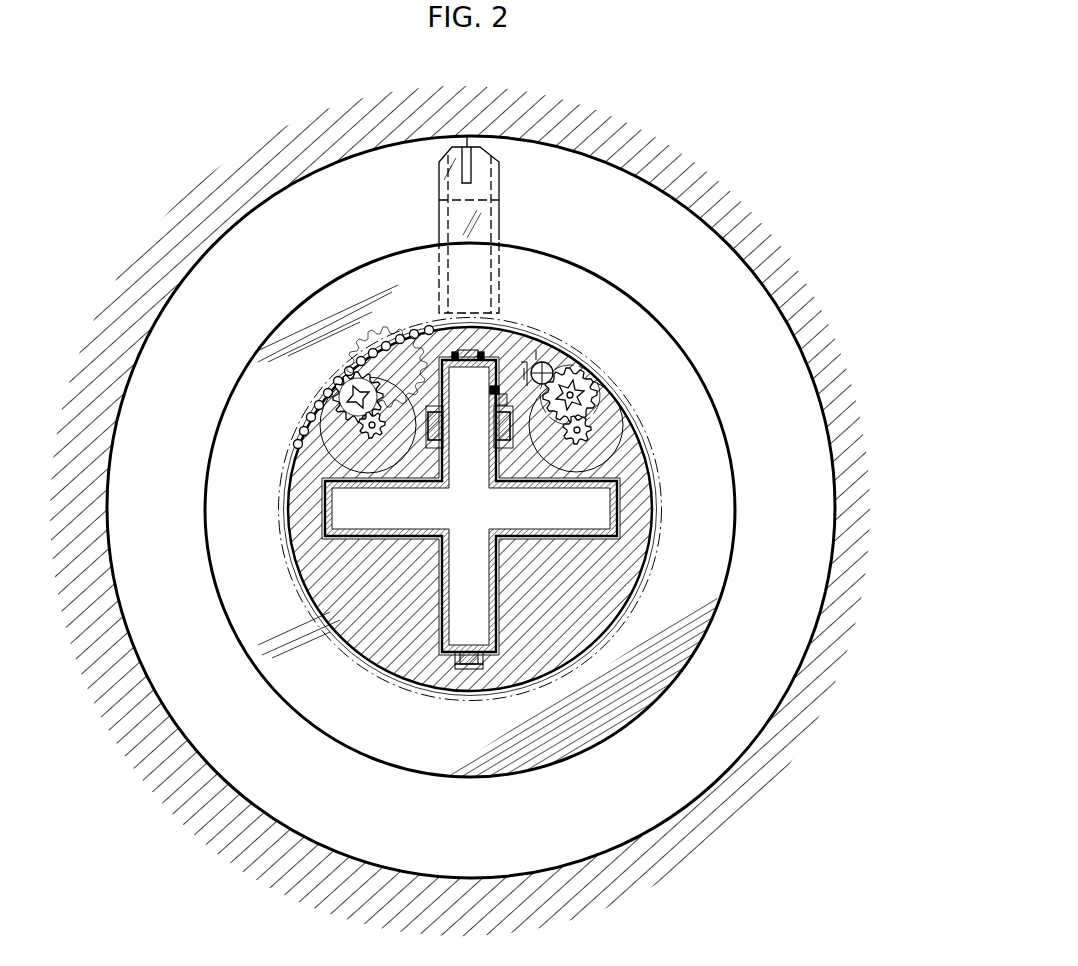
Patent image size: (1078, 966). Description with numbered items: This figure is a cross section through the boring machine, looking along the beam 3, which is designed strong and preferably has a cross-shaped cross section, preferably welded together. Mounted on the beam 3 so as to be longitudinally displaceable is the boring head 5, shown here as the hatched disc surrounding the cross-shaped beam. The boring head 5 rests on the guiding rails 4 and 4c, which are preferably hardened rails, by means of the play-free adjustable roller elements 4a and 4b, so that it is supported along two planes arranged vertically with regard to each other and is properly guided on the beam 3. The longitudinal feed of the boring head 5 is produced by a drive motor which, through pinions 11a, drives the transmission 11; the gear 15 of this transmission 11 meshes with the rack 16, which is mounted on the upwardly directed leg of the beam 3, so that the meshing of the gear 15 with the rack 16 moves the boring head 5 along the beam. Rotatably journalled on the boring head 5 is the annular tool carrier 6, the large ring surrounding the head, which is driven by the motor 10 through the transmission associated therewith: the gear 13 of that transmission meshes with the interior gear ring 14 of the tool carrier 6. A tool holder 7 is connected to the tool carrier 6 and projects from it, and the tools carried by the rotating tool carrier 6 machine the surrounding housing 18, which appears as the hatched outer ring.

The housing 18 is at (662, 148).
The annular tool carrier 6 is at (705, 555).
The tool holder 7 is at (482, 182).
The boring head 5 is at (330, 590).
The gear 13 is at (372, 370).
The motor 10 is at (355, 425).
The interior gear ring 14 is at (322, 392).
The transmission 11 is at (611, 373).
The pinions 11a is at (590, 428).
The gear 15 is at (531, 358).
The beam 3 is at (597, 513).
The guiding rail 4 is at (497, 440).
The roller element 4a is at (433, 408).
The roller element 4b is at (452, 352).
The guiding rail 4c is at (480, 350).
The rack 16 is at (490, 393).